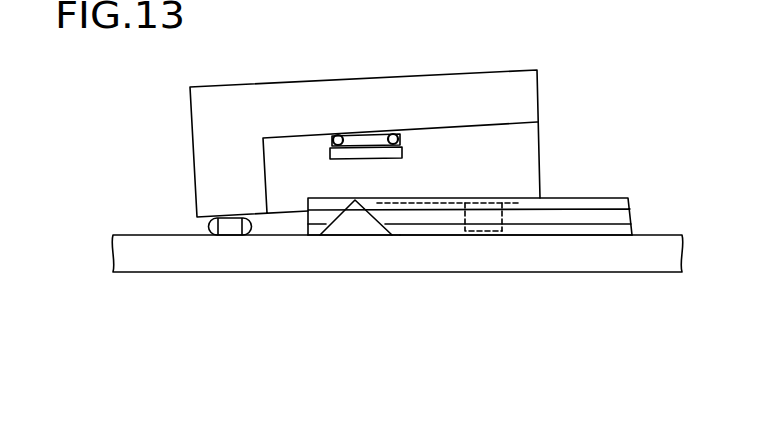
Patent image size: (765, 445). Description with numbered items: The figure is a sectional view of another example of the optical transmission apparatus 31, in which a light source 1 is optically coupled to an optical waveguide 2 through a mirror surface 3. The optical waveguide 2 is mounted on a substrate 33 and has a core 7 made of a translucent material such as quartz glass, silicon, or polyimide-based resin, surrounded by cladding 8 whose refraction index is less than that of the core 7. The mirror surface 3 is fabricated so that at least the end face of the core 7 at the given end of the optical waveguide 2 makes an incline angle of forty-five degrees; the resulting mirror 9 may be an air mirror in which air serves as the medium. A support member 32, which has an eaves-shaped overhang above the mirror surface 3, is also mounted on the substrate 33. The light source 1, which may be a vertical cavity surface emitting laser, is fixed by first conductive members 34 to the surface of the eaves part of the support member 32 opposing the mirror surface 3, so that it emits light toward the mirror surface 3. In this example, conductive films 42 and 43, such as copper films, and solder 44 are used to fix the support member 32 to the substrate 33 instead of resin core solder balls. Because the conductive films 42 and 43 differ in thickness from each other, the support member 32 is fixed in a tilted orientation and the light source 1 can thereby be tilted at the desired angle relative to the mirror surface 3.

The light source 1 is at (368, 134).
The optical waveguide 2 is at (577, 199).
The mirror surface 3 is at (399, 236).
The core 7 is at (622, 219).
The cladding 8 is at (615, 203).
The mirror 9 is at (342, 238).
The optical transmission apparatus 31 is at (365, 155).
The support member 32 is at (222, 88).
The substrate 33 is at (133, 243).
The first conductive members 34 is at (343, 134).
The conductive film 42 is at (230, 238).
The conductive film 43 is at (480, 237).
The solder 44 is at (209, 233).